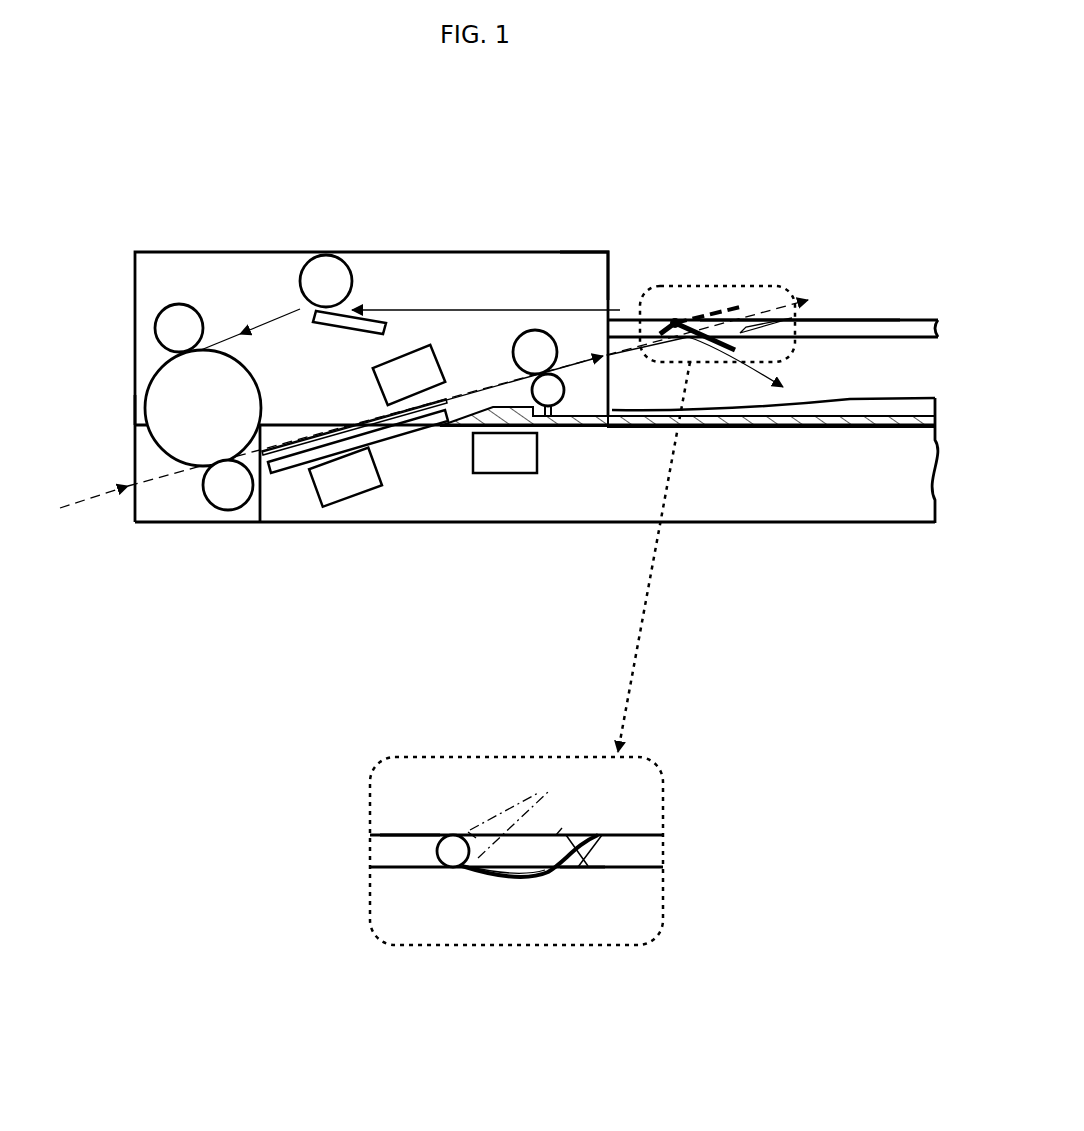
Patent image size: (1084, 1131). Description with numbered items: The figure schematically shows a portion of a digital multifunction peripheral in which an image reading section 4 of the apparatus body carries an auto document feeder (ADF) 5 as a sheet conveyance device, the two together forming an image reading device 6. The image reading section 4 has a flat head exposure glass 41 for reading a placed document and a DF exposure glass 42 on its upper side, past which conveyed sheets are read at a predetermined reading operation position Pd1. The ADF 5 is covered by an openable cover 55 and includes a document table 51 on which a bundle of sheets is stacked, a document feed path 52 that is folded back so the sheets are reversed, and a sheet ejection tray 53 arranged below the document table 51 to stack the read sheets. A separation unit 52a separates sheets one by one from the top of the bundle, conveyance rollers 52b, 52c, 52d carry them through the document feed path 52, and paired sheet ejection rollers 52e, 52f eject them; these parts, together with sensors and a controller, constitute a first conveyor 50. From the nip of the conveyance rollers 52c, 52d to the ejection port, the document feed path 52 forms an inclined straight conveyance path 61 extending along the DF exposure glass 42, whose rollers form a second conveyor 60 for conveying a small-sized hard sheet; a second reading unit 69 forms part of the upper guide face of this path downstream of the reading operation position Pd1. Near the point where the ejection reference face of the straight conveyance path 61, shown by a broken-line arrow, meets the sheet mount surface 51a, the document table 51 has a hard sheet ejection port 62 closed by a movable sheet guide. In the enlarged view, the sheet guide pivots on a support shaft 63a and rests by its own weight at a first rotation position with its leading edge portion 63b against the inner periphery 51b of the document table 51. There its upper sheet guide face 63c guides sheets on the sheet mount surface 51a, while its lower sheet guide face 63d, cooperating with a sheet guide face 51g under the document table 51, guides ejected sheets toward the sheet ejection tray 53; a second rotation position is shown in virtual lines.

The image reading section 4 is at (890, 524).
The auto document feeder (ADF) 5 is at (236, 246).
The image reading device 6 is at (127, 410).
The flat head exposure glass 41 is at (846, 412).
The DF exposure glass 42 is at (395, 440).
The first conveyor 50 is at (360, 270).
The document table 51 is at (835, 306).
The sheet mount surface 51a is at (907, 320).
The inner periphery 51b is at (590, 867).
The sheet guide face 51g is at (572, 870).
The document feed path 52 is at (207, 290).
The separation unit 52a is at (308, 270).
The conveyance roller 52b is at (165, 311).
The conveyance roller 52c is at (163, 388).
The conveyance roller 52d is at (235, 510).
The sheet ejection roller 52e is at (554, 330).
The sheet ejection roller 52f is at (568, 389).
The sheet ejection tray 53 is at (905, 398).
The cover 55 is at (582, 252).
The second conveyor 60 is at (200, 490).
The straight conveyance path 61 is at (105, 515).
The hard sheet ejection port 62 is at (752, 330).
The support shaft 63a is at (445, 866).
The leading edge portion 63b is at (556, 835).
The upper sheet guide face 63c is at (468, 832).
The lower sheet guide face 63d is at (495, 868).
The second reading unit 69 is at (440, 368).
The reading operation position Pd1 is at (345, 425).